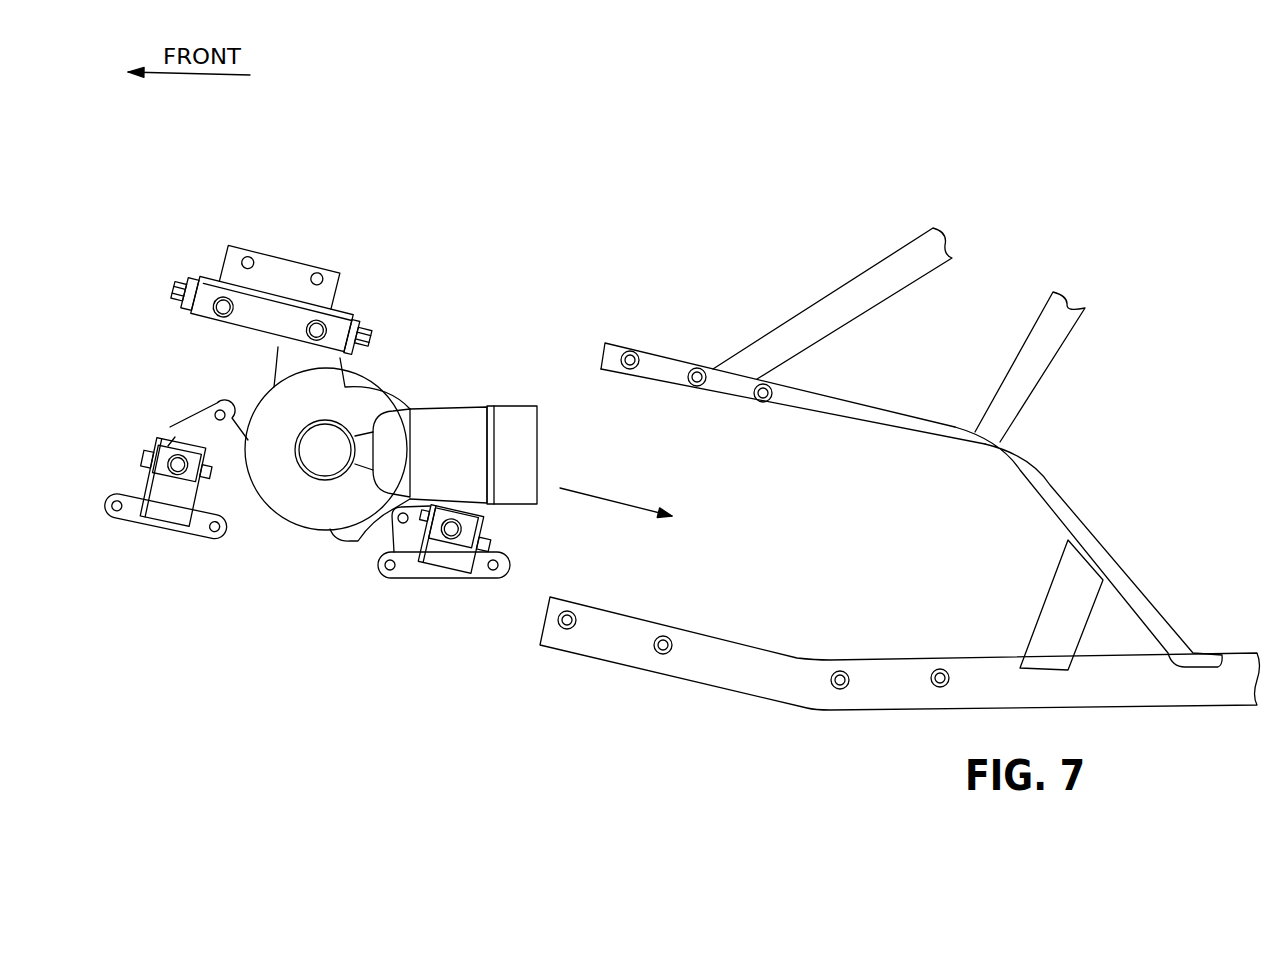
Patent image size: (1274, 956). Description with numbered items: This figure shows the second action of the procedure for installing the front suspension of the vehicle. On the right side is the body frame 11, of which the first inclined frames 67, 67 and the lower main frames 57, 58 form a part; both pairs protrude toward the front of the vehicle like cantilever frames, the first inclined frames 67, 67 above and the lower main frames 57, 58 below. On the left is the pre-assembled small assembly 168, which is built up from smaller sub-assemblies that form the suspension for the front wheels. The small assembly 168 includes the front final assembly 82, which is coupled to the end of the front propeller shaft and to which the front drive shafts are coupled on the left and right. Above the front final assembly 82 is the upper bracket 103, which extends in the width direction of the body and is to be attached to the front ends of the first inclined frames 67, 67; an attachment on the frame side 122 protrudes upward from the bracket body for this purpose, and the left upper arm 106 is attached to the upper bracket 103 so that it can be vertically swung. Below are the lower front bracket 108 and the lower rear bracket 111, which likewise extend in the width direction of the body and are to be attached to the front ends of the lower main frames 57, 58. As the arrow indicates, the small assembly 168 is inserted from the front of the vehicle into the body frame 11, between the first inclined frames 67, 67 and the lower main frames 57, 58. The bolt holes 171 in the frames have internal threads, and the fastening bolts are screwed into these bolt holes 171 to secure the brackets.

The body frame 11 is at (1057, 487).
The lower main frame 57 is at (895, 696).
The lower main frame 58 is at (616, 668).
The first inclined frame 67 is at (668, 348).
The front final assembly 82 is at (393, 390).
The upper bracket 103 is at (302, 260).
The left upper arm 106 is at (210, 322).
The lower front bracket 108 is at (155, 535).
The lower rear bracket 111 is at (438, 580).
The attachment on the frame side 122 is at (178, 476).
The small assembly 168 is at (272, 248).
The bolt hole 171 is at (630, 369).